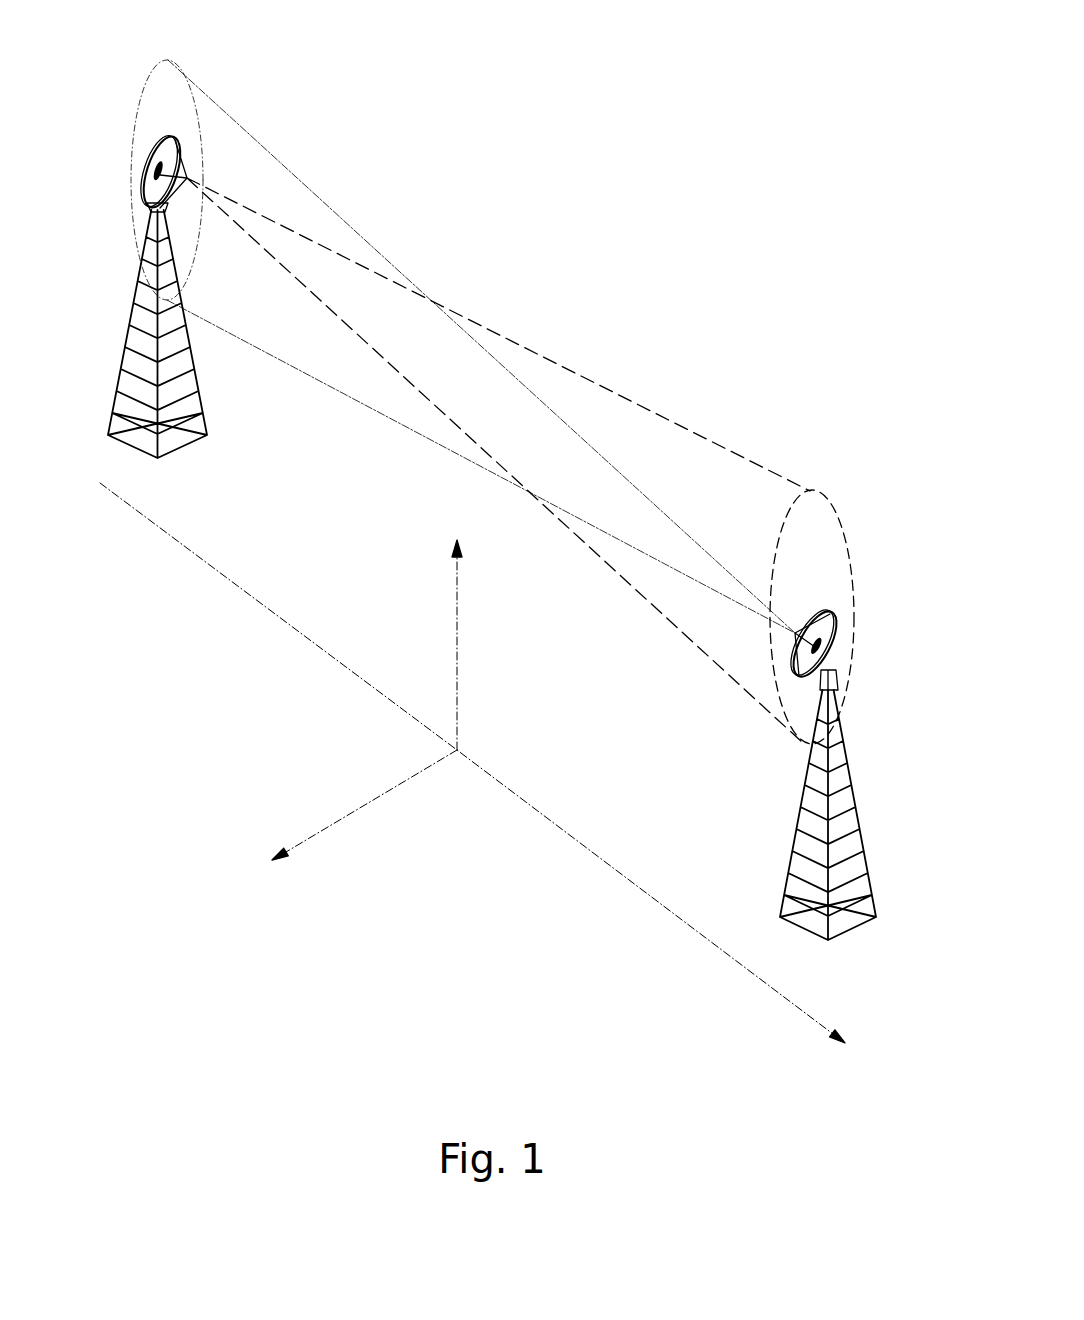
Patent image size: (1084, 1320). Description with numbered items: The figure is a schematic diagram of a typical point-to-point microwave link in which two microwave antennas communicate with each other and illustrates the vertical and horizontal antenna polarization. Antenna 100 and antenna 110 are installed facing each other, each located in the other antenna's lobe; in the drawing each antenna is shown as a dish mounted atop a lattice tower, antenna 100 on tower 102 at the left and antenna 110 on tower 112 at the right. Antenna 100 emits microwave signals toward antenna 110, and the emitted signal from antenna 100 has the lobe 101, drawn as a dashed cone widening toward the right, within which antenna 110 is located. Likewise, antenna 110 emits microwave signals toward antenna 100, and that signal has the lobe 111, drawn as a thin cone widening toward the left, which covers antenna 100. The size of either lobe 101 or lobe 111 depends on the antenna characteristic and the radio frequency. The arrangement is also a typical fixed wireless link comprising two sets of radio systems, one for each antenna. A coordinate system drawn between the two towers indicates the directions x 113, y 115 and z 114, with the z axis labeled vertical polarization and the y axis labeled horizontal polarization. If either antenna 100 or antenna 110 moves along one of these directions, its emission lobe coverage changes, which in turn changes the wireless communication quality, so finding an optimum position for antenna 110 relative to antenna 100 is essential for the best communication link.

The antenna 100 is at (150, 157).
The lobe 101 is at (670, 423).
The first tower 102 is at (200, 398).
The antenna 110 is at (835, 620).
The lobe 111 is at (293, 173).
The second tower 112 is at (785, 867).
The x direction 113 is at (690, 925).
The z direction 114 is at (457, 703).
The y direction 115 is at (387, 793).